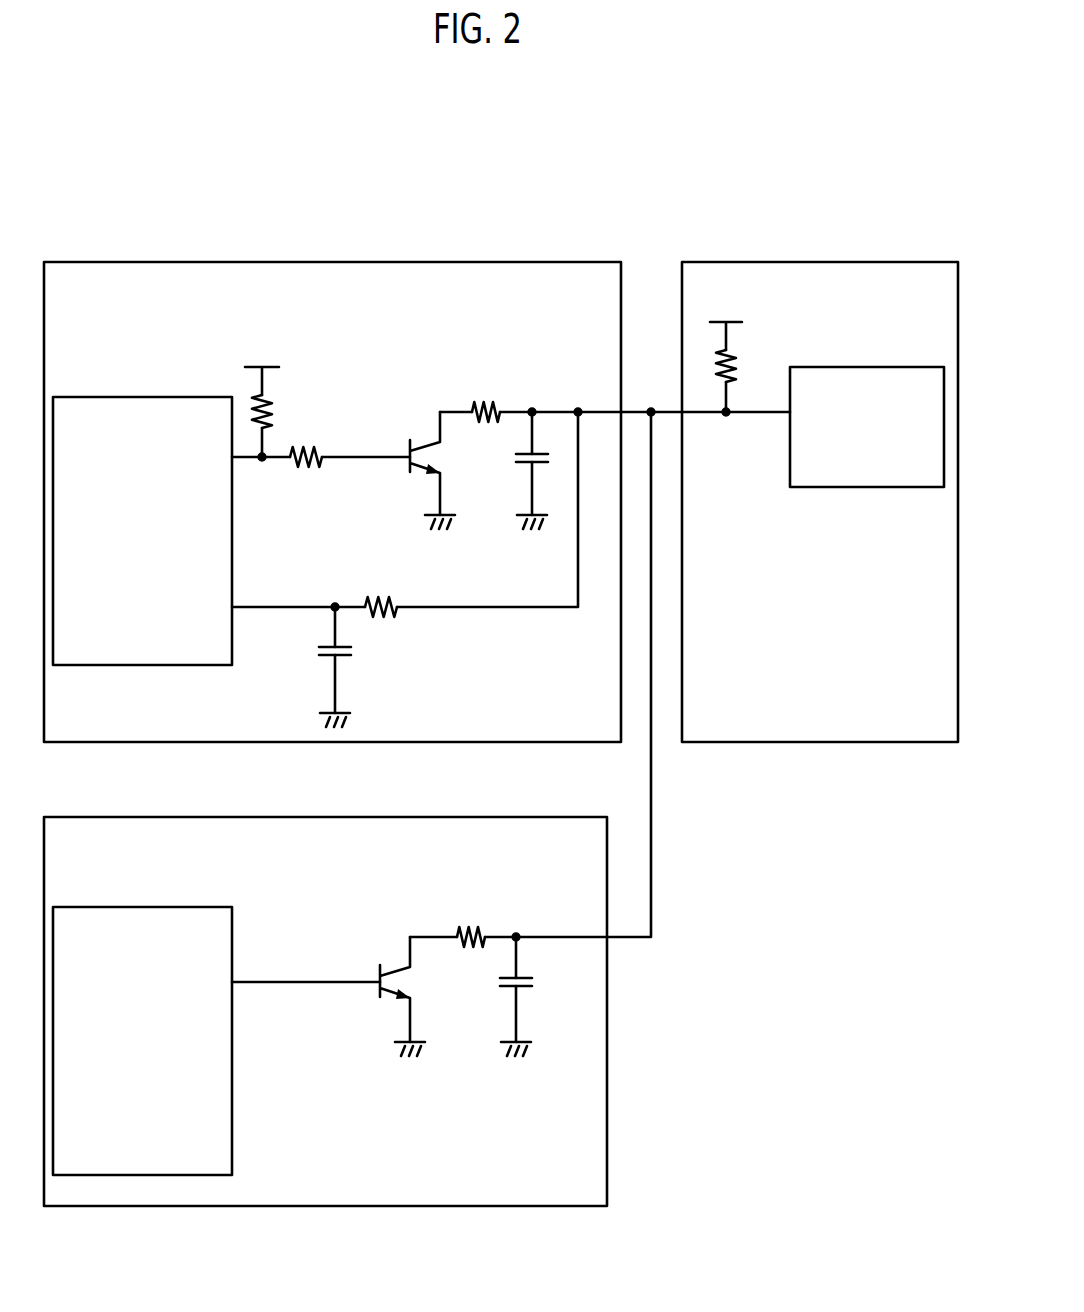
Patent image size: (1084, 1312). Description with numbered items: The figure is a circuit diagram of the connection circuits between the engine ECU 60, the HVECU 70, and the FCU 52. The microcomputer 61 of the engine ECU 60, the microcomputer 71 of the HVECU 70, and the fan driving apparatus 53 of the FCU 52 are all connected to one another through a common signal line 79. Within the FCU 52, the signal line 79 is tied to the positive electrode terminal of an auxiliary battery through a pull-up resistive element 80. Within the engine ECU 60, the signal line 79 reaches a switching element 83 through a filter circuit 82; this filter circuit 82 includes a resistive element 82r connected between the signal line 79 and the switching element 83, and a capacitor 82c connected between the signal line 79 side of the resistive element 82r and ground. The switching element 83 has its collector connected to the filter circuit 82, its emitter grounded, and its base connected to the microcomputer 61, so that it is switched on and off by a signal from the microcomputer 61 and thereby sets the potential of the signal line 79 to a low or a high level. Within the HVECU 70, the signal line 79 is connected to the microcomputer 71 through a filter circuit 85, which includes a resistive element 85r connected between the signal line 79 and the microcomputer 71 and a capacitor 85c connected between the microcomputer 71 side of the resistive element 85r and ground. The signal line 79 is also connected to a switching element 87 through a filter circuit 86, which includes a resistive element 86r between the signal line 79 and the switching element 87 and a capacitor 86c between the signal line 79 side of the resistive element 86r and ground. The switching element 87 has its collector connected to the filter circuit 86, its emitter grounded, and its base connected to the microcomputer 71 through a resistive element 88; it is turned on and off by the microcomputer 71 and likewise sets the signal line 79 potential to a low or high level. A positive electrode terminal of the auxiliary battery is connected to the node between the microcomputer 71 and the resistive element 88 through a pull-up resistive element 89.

The HVECU 70 is at (349, 261).
The microcomputer 71 is at (170, 395).
The FCU 52 is at (826, 261).
The fan driving apparatus 53 is at (885, 365).
The engine ECU 60 is at (350, 815).
The microcomputer 61 is at (170, 905).
The signal line 79 is at (653, 816).
The pull-up resistive element 80 is at (735, 357).
The filter circuit 82 is at (460, 959).
The resistive element 82r is at (455, 929).
The capacitor 82c is at (505, 989).
The switching element 83 is at (378, 975).
The filter circuit 85 is at (362, 629).
The resistive element 85r is at (395, 598).
The capacitor 85c is at (325, 657).
The filter circuit 86 is at (542, 433).
The resistive element 86r is at (470, 404).
The capacitor 86c is at (520, 463).
The switching element 87 is at (408, 447).
The resistive element 88 is at (322, 463).
The pull-up resistive element 89 is at (270, 398).